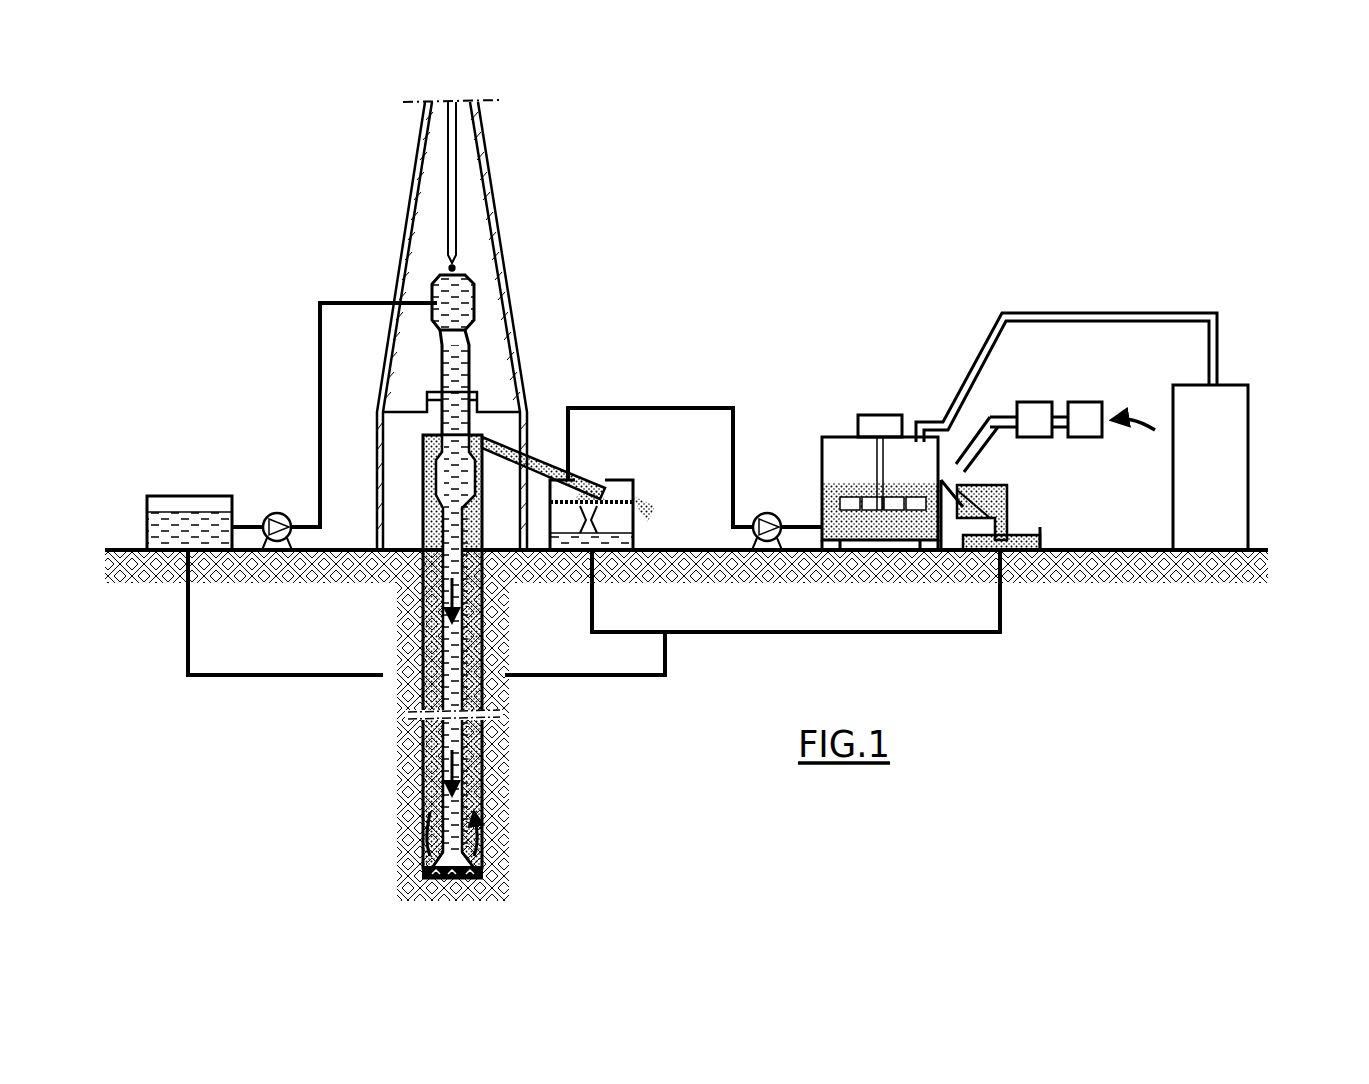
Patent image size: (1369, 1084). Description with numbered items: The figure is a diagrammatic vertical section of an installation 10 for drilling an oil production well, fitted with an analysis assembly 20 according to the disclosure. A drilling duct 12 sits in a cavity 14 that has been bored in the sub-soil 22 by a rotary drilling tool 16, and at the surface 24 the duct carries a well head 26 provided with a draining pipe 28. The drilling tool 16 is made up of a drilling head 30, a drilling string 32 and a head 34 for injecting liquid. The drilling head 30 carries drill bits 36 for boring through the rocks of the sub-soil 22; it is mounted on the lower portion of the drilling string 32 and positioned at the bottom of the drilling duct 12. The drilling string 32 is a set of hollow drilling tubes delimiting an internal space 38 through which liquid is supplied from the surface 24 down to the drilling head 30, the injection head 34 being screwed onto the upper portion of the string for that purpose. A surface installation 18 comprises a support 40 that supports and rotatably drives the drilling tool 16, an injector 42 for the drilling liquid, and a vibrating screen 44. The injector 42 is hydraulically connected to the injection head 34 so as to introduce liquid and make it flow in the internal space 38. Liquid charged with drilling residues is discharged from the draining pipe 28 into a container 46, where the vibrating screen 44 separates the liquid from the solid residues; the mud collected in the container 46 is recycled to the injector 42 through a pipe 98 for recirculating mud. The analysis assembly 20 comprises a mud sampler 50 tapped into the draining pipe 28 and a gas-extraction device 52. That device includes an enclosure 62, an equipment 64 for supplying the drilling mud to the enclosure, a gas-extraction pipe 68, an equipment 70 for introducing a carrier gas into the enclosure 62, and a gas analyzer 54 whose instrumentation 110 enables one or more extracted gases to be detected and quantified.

The installation 10 is at (790, 248).
The drilling duct 12 is at (445, 616).
The cavity 14 is at (423, 853).
The rotary drilling tool 16 is at (425, 640).
The surface installation 18 is at (578, 330).
The analysis assembly 20 is at (992, 389).
The sub-soil 22 is at (479, 742).
The surface 24 is at (125, 550).
The well head 26 is at (498, 432).
The draining pipe 28 is at (502, 458).
The drilling head 30 is at (470, 880).
The drilling string 32 is at (470, 648).
The head for the injection of liquid 34 is at (474, 300).
The drill bits 36 is at (430, 879).
The internal space 38 is at (455, 690).
The support 40 is at (420, 395).
The injector 42 is at (190, 495).
The vibrating screen 44 is at (605, 470).
The container 46 is at (606, 517).
The mud sampler 50 is at (675, 405).
The gas-extraction device 52 is at (888, 395).
The gas analyzer 54 is at (1241, 424).
The enclosure 62 is at (822, 441).
The equipment for supplying the drilling mud 64 is at (795, 524).
The gas-extraction pipe 68 is at (990, 367).
The equipment for introducing a carrier gas 70 is at (1055, 442).
The pipe for recirculating mud 98 is at (225, 677).
The instrumentation 110 is at (1250, 409).